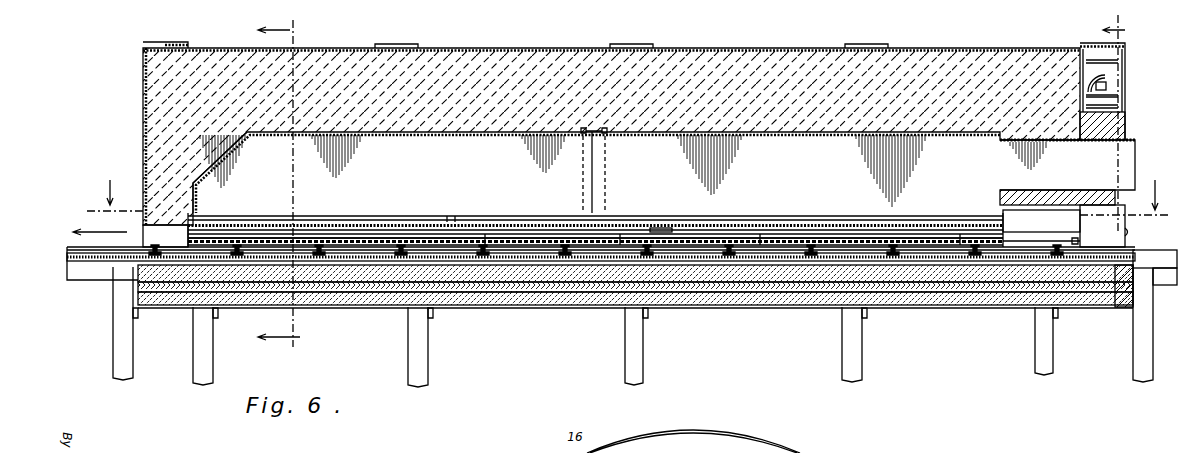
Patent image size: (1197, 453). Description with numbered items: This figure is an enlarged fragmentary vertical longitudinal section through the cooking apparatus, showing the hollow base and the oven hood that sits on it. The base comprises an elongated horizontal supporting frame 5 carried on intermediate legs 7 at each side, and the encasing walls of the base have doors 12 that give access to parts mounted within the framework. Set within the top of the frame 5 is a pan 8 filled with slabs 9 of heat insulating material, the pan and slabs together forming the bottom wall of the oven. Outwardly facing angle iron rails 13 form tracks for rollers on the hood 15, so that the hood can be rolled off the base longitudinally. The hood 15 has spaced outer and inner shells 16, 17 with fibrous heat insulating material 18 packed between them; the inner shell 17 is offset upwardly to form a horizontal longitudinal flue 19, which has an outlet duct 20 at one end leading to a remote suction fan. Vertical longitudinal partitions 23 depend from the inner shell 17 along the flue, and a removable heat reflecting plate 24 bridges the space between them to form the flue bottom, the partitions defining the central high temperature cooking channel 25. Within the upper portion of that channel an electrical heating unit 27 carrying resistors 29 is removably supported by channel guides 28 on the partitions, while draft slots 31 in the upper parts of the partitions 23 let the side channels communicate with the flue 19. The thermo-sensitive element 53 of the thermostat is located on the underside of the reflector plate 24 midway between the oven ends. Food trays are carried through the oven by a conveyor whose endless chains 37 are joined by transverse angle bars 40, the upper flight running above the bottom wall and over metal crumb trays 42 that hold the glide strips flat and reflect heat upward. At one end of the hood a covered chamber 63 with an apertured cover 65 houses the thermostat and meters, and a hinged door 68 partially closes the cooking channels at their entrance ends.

The horizontal supporting frame 5 is at (90, 275).
The intermediate legs 7 is at (855, 343).
The pan 8 is at (512, 306).
The slabs of heat insulating material 9 is at (360, 290).
The doors 12 is at (294, 183).
The angle iron rails 13 is at (1101, 157).
The hood 15 is at (712, 40).
The outer shell 16 is at (517, 48).
The inner shell 17 is at (197, 170).
The fibrous heat insulating material 18 is at (785, 55).
The horizontal longitudinal flue 19 is at (623, 171).
The outlet duct 20 is at (1037, 138).
The vertical longitudinal partitions 23 is at (453, 216).
The heat reflecting plate 24 is at (695, 228).
The high temperature cooking channel 25 is at (530, 228).
The electrical heating unit 27 is at (790, 229).
The channel guides 28 is at (1045, 220).
The resistor 29 is at (380, 228).
The draft slots 31 is at (775, 222).
The endless chains 37 is at (612, 222).
The transverse angle bars 40 is at (285, 228).
The crumb trays 42 is at (571, 270).
The thermo-sensitive element 53 is at (660, 228).
The covered chamber 63 is at (1110, 68).
The cover 65 is at (1122, 125).
The hinged door 68 is at (1125, 232).